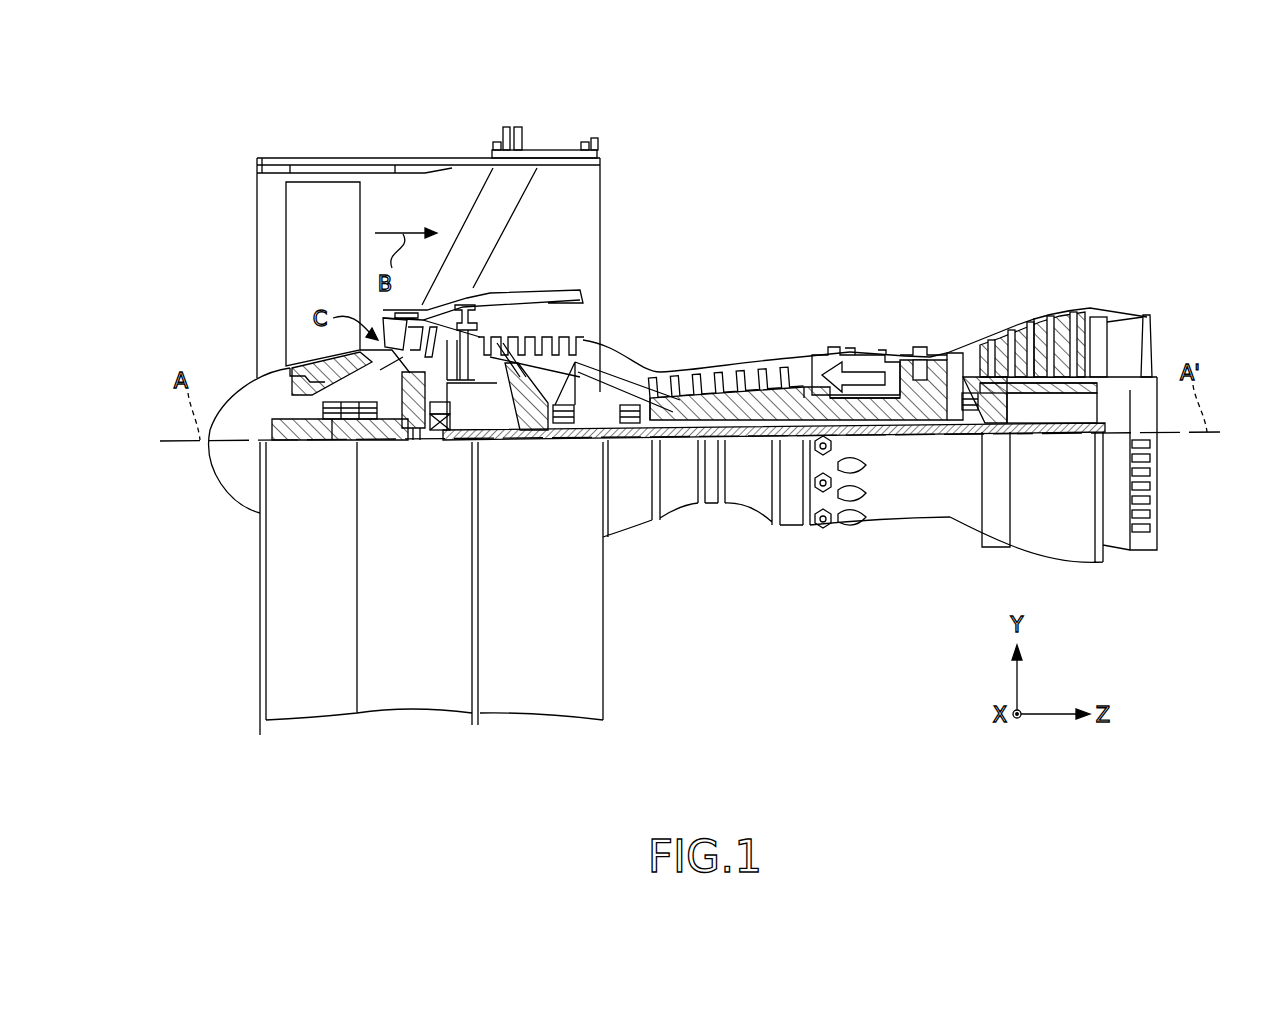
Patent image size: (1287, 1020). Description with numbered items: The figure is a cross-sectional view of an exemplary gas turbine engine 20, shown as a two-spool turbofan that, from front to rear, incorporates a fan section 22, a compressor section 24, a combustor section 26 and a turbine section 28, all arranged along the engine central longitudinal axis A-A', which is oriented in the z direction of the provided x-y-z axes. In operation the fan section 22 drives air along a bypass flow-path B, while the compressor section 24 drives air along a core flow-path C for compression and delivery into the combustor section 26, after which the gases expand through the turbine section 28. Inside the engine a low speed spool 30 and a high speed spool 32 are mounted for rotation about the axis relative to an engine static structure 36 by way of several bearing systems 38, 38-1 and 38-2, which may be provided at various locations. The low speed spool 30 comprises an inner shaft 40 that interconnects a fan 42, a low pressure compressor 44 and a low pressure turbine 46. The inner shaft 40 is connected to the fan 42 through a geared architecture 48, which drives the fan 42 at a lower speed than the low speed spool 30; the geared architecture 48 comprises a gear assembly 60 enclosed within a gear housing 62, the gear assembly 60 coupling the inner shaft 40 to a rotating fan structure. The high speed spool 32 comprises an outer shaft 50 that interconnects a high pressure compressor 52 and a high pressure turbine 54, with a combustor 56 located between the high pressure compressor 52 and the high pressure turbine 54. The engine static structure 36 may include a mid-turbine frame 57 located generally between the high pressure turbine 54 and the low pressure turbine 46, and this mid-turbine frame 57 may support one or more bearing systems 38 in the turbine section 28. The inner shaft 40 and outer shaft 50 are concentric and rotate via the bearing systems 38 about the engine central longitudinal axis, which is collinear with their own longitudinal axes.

The gas turbine engine 20 is at (900, 150).
The fan section 22 is at (447, 142).
The compressor section 24 is at (473, 255).
The combustor section 26 is at (810, 253).
The turbine section 28 is at (1095, 253).
The low speed spool 30 is at (752, 457).
The high speed spool 32 is at (795, 395).
The engine static structure 36 is at (230, 750).
The bearing system 38 is at (962, 393).
The bearing system 38-1 is at (333, 417).
The bearing system 38-2 is at (562, 425).
The inner shaft 40 is at (620, 442).
The fan 42 is at (298, 285).
The low pressure compressor 44 is at (540, 343).
The low pressure turbine 46 is at (1040, 312).
The geared architecture 48 is at (428, 482).
The outer shaft 50 is at (853, 418).
The high pressure compressor 52 is at (770, 405).
The high pressure turbine 54 is at (918, 355).
The combustor 56 is at (847, 375).
The mid-turbine frame 57 is at (948, 365).
The gear assembly 60 is at (465, 411).
The gear housing 62 is at (468, 392).